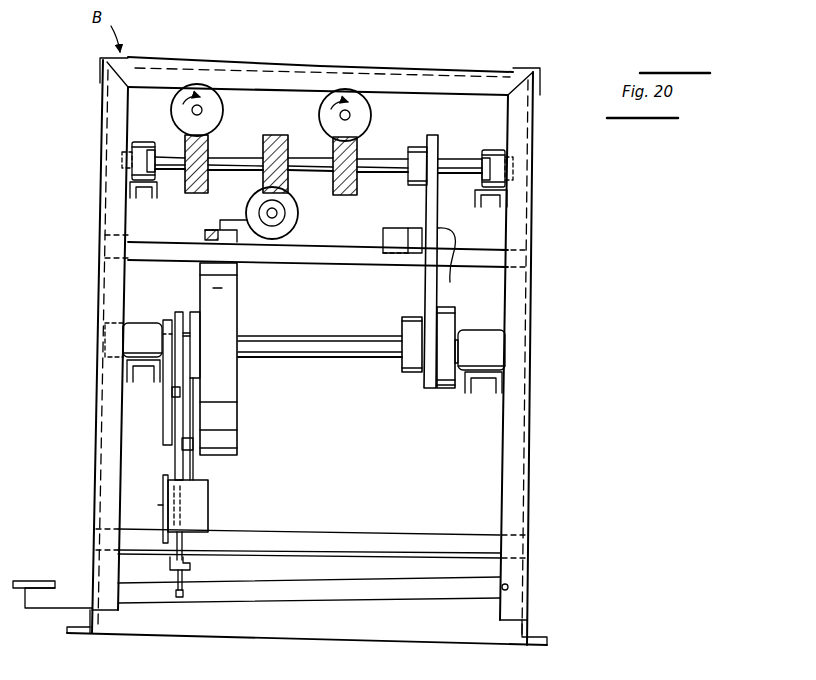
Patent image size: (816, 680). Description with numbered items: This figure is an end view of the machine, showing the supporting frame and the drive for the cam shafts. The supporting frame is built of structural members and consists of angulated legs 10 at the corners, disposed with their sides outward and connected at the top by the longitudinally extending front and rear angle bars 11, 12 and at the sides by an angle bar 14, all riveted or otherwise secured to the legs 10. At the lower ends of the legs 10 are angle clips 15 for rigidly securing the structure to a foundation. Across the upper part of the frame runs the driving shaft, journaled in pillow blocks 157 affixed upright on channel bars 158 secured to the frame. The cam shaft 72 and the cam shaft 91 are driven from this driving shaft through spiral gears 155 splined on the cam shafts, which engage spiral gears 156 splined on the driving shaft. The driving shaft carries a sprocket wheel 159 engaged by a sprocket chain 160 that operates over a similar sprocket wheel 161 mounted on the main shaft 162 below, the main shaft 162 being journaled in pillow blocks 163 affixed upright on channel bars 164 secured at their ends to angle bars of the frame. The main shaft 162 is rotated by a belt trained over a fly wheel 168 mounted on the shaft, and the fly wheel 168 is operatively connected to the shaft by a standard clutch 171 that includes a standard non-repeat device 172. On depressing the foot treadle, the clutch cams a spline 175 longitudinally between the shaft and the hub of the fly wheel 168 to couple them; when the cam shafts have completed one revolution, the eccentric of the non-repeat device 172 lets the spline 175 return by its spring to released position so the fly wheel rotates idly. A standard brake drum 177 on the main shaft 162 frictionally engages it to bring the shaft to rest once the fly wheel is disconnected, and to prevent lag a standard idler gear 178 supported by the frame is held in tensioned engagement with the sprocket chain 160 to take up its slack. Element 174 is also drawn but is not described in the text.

The angulated legs 10 is at (100, 303).
The front angle bar 11 is at (100, 73).
The rear angle bar 12 is at (520, 68).
The angle bar 14 is at (403, 71).
The angle clips 15 is at (67, 625).
The cam shaft 72 is at (340, 113).
The cam shaft 91 is at (298, 213).
The spiral gears 155 is at (186, 112).
The spiral gears 156 is at (240, 141).
The pillow blocks 157 is at (130, 148).
The channel bars 158 is at (130, 192).
The sprocket wheel 159 is at (417, 145).
The sprocket chain 160 is at (434, 207).
The sprocket wheel 161 is at (413, 317).
The main shaft 162 is at (362, 362).
The pillow blocks 163 is at (138, 337).
The channel bars 164 is at (140, 377).
The fly wheel 168 is at (230, 391).
The clutch 171 is at (166, 316).
The non-repeat device 172 is at (208, 510).
The support platform 174 is at (52, 552).
The spline 175 is at (182, 313).
The brake drum 177 is at (440, 418).
The idler gear 178 is at (460, 263).